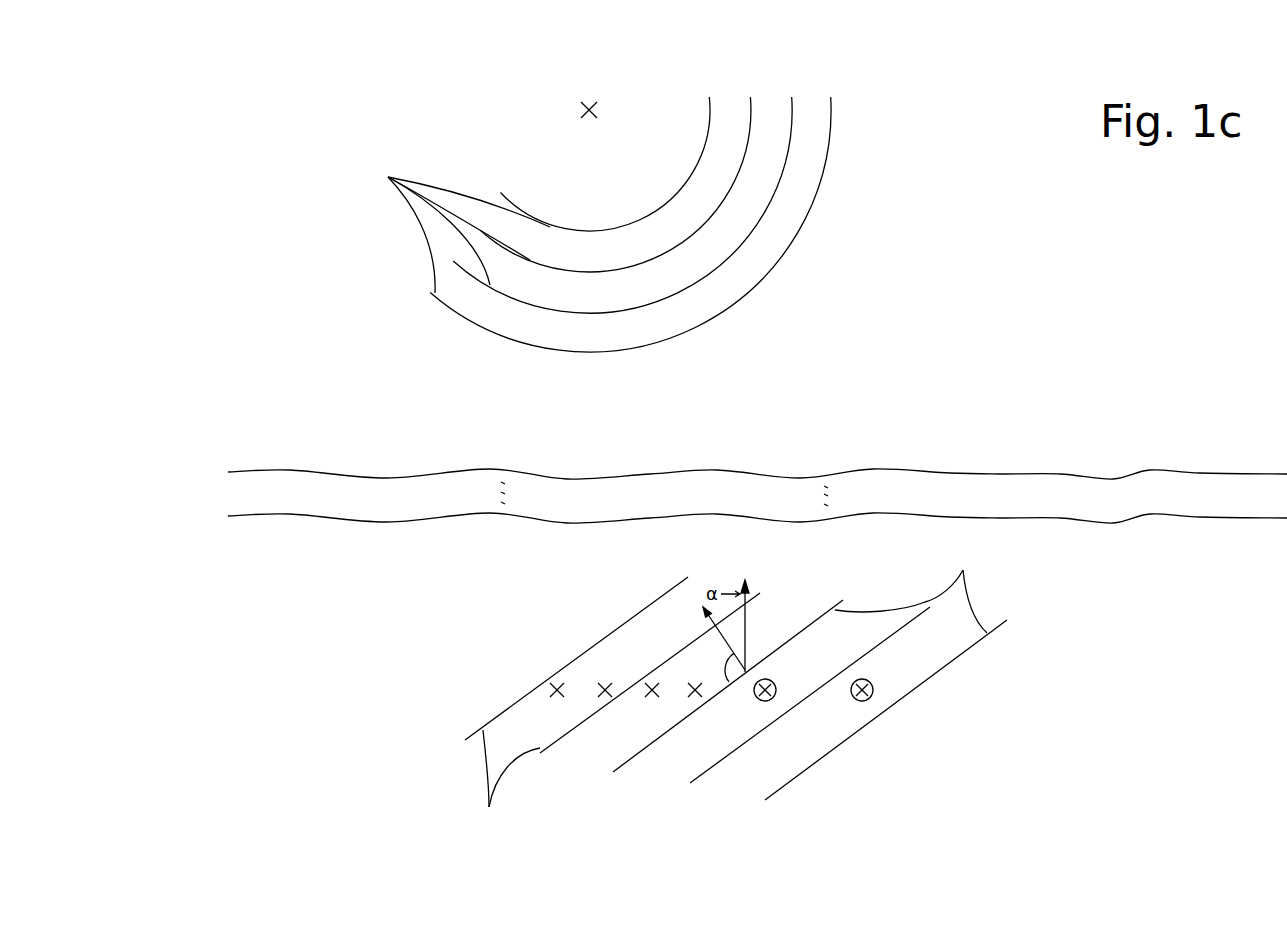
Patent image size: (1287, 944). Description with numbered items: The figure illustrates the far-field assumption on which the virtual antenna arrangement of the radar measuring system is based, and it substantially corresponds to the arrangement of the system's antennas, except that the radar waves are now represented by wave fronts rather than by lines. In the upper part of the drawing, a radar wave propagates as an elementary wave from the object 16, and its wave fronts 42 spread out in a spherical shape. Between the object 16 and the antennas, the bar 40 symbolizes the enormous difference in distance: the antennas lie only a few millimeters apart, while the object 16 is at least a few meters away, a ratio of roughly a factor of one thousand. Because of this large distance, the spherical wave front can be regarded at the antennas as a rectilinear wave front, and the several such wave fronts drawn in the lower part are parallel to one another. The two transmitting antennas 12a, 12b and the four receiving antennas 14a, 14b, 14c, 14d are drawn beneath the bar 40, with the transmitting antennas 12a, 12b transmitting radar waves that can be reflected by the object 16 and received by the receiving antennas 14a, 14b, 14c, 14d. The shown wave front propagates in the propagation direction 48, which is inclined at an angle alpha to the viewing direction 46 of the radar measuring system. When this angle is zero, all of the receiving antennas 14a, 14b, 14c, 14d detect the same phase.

The object 16 is at (589, 98).
The wave fronts 42 is at (593, 224).
The bar 40 is at (250, 495).
The viewing direction 46 is at (748, 627).
The propagation direction 48 is at (697, 618).
The receiving antenna 14a is at (550, 683).
The receiving antenna 14b is at (597, 685).
The receiving antenna 14c is at (651, 702).
The receiving antenna 14d is at (693, 703).
The transmitting antenna 12a is at (760, 703).
The transmitting antenna 12b is at (863, 702).